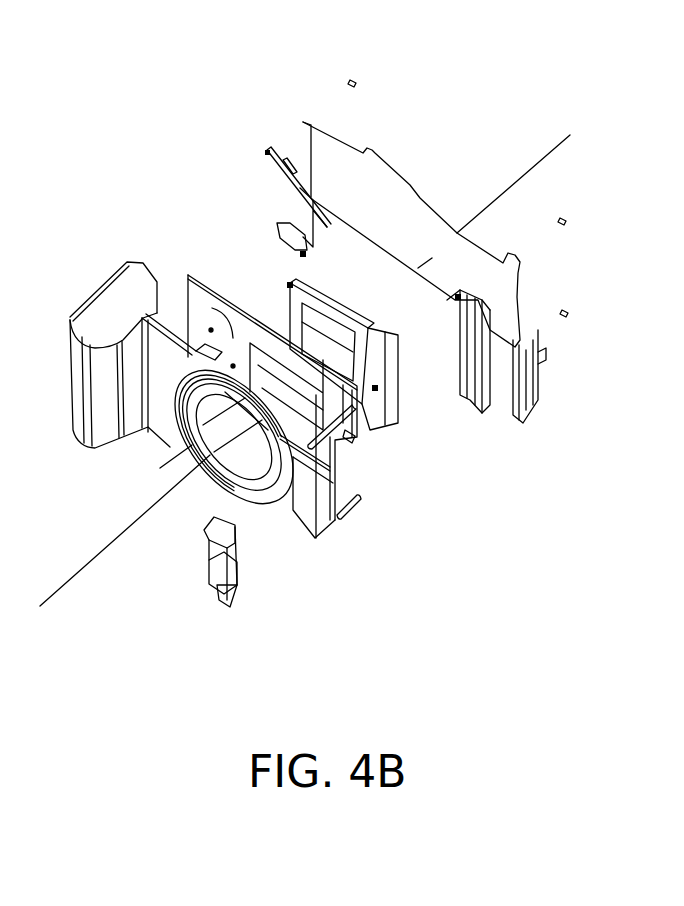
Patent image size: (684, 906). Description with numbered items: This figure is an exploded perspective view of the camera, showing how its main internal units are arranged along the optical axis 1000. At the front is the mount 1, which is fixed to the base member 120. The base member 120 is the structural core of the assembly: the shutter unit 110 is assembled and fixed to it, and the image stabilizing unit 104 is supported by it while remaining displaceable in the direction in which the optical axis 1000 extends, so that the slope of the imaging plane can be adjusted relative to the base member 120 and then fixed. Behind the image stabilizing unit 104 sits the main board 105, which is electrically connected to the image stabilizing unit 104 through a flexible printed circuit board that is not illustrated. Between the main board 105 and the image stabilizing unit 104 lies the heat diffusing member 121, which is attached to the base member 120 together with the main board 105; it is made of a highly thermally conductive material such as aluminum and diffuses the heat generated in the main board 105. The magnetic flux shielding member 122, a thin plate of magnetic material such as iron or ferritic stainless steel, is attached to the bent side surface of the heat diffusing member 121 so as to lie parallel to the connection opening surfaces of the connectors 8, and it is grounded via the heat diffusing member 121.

The mount 1 is at (200, 452).
The connectors 8 is at (238, 545).
The image stabilizing unit 104 is at (375, 422).
The main board 105 is at (367, 193).
The shutter unit 110 is at (228, 300).
The base member 120 is at (160, 375).
The heat diffusing member 121 is at (325, 235).
The magnetic flux shielding member 122 is at (533, 417).
The optical axis 1000 is at (82, 570).